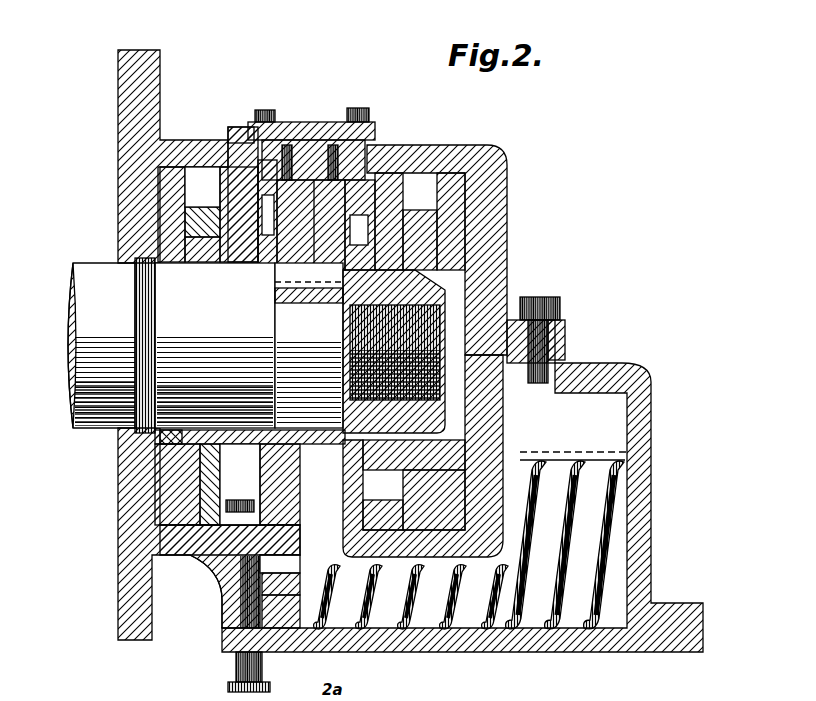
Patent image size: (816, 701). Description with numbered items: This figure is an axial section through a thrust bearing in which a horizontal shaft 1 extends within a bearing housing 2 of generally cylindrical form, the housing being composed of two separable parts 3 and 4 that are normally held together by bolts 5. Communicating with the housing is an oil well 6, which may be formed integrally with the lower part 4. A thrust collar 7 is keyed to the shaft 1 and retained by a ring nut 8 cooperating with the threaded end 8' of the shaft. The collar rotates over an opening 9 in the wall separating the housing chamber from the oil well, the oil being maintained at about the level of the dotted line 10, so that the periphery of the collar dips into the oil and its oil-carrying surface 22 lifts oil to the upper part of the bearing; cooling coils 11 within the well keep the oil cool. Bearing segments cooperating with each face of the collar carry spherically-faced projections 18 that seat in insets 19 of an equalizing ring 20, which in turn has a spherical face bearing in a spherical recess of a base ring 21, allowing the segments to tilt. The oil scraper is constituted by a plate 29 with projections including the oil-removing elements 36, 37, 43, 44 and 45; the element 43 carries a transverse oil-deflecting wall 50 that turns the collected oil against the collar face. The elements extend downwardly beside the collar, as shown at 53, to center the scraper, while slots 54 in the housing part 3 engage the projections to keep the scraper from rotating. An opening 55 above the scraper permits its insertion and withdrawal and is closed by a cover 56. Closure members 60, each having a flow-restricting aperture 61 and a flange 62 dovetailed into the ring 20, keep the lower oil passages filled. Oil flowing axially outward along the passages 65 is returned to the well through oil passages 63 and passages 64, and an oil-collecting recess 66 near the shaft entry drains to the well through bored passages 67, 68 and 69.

The horizontal shaft 1 is at (314, 672).
The bearing housing 2 is at (472, 156).
The housing part 3 is at (565, 338).
The lower part of housing 4 is at (490, 428).
The bolts 5 is at (552, 302).
The oil well 6 is at (624, 541).
The thrust collar 7 is at (262, 420).
The ring nut 8 is at (440, 339).
The threaded end of the shaft 8' is at (449, 335).
The opening 9 is at (285, 546).
The dotted line 10 is at (624, 455).
The cooling coils 11 is at (590, 570).
The spherically-faced projections 18 is at (281, 580).
The insets 19 is at (284, 607).
The equalizing ring 20 is at (160, 236).
The base ring 21 is at (160, 200).
The oil-carrying surface 22 is at (232, 594).
The plate 29 is at (300, 121).
The oil-removing element 36 is at (322, 140).
The oil-removing element 37 is at (262, 110).
The oil-removing element 43 is at (365, 122).
The oil-removing element 44 is at (333, 142).
The oil-removing element 45 is at (358, 107).
The transverse oil-deflecting wall 50 is at (240, 126).
The downward extensions 53 is at (228, 150).
The slots 54 is at (400, 158).
The opening 55 is at (385, 165).
The cover 56 is at (372, 145).
The closure members 60 is at (212, 552).
The aperture 61 is at (254, 512).
The flange 62 is at (163, 524).
The oil passages 63 is at (535, 480).
The passages 64 is at (135, 566).
The passages 65 is at (186, 436).
The oil-collecting recess 66 is at (150, 447).
The bored passage 67 is at (160, 497).
The bored passage 68 is at (165, 540).
The bored passage 69 is at (218, 578).